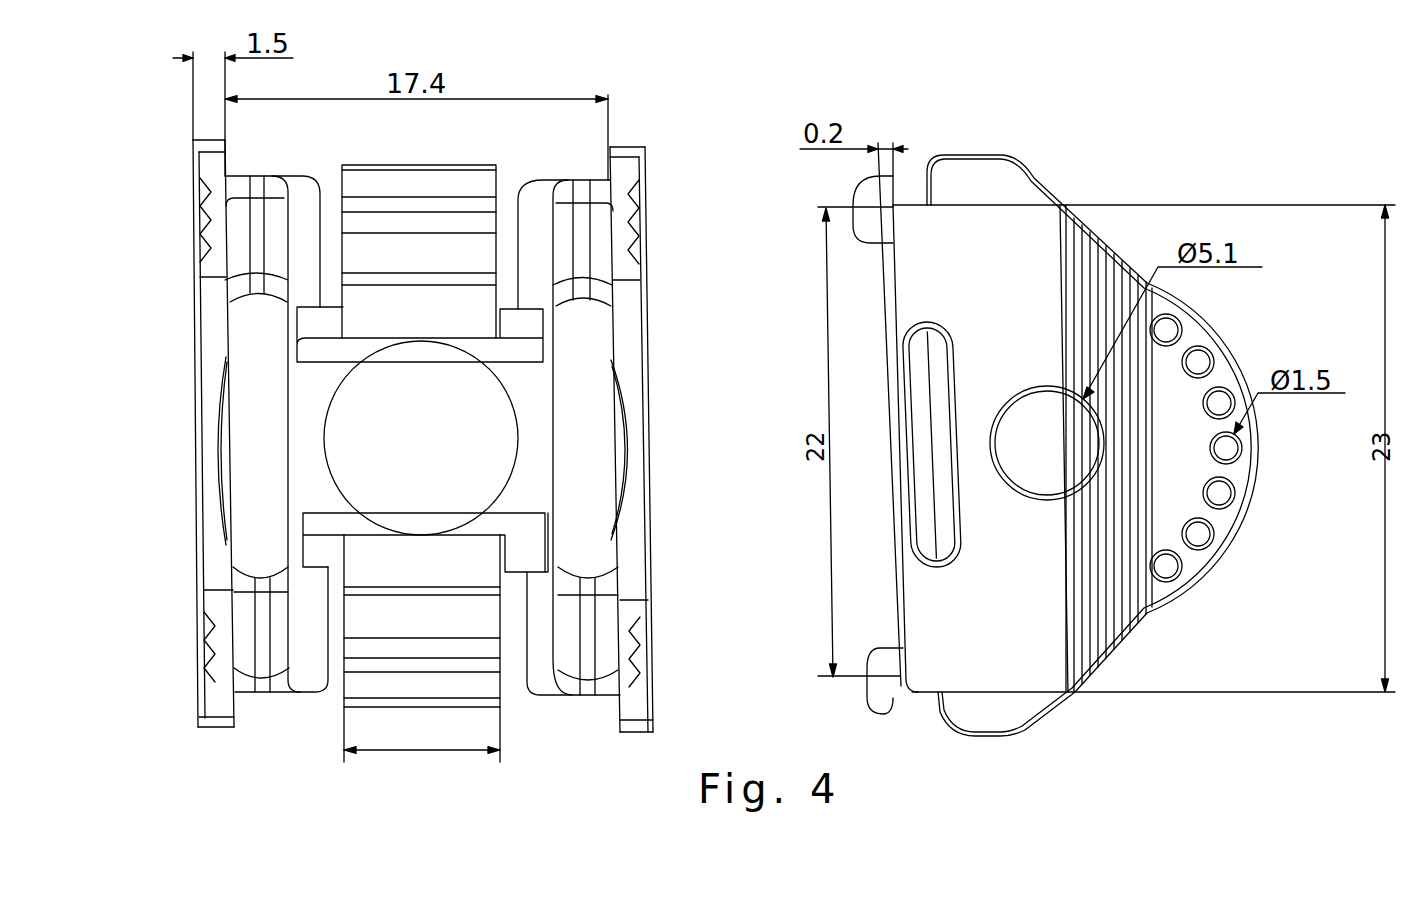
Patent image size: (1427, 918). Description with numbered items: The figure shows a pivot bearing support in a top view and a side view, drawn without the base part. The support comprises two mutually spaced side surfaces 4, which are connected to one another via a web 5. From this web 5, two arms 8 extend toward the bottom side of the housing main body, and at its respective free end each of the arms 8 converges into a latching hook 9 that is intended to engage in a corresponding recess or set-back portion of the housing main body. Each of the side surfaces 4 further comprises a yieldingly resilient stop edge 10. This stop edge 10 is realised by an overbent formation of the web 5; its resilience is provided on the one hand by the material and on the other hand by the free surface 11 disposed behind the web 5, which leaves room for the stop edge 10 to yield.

The side surfaces 4 is at (218, 166).
The web 5 is at (542, 497).
The arms 8 is at (492, 223).
The latching hook 9 is at (884, 190).
The yieldingly resilient stop edge 10 is at (641, 413).
The free surface 11 is at (921, 372).